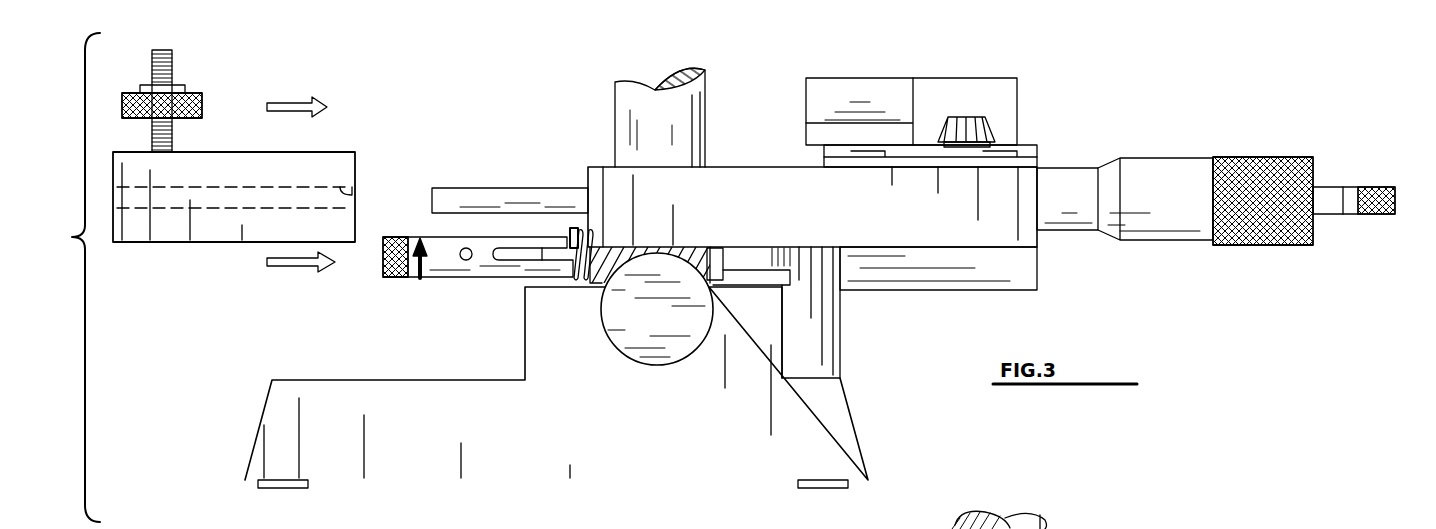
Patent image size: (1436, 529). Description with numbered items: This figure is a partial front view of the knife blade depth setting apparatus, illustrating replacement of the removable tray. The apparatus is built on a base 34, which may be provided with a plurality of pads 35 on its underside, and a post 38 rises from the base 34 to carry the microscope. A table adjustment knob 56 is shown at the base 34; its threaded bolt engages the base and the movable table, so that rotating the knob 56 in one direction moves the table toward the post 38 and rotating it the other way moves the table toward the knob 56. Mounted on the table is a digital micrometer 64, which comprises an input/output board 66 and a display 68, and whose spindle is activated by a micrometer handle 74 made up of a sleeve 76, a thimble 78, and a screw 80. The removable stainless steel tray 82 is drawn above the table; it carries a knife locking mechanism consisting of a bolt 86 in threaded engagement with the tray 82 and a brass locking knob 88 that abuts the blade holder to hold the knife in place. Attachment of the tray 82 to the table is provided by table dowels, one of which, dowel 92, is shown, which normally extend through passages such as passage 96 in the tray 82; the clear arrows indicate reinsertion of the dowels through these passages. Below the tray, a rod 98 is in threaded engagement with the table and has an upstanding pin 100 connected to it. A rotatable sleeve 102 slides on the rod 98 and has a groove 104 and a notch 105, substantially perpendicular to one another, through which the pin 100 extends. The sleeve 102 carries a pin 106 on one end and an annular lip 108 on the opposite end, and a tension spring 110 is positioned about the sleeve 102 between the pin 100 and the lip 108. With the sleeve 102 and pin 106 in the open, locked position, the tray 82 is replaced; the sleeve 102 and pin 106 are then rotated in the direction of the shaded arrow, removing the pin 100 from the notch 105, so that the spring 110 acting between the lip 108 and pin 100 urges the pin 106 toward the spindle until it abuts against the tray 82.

The base 34 is at (607, 420).
The pads 35 is at (288, 489).
The post 38 is at (697, 131).
The table adjustment knob 56 is at (665, 332).
The digital micrometer 64 is at (931, 223).
The input/output board 66 is at (1037, 147).
The display 68 is at (920, 143).
The micrometer handle 74 is at (1216, 175).
The sleeve 76 is at (1069, 235).
The thimble 78 is at (1190, 241).
The screw 80 is at (1363, 215).
The tray 82 is at (270, 178).
The bolt 86 is at (173, 70).
The brass locking knob 88 is at (203, 100).
The table dowel 92 is at (514, 186).
The passage 96 is at (358, 189).
The rod 98 is at (535, 255).
The pin 100 is at (572, 228).
The rotatable sleeve 102 is at (383, 256).
The groove 104 is at (500, 270).
The notch 105 is at (556, 236).
The pin 106 is at (462, 261).
The annular lip 108 is at (718, 281).
The tension spring 110 is at (590, 281).